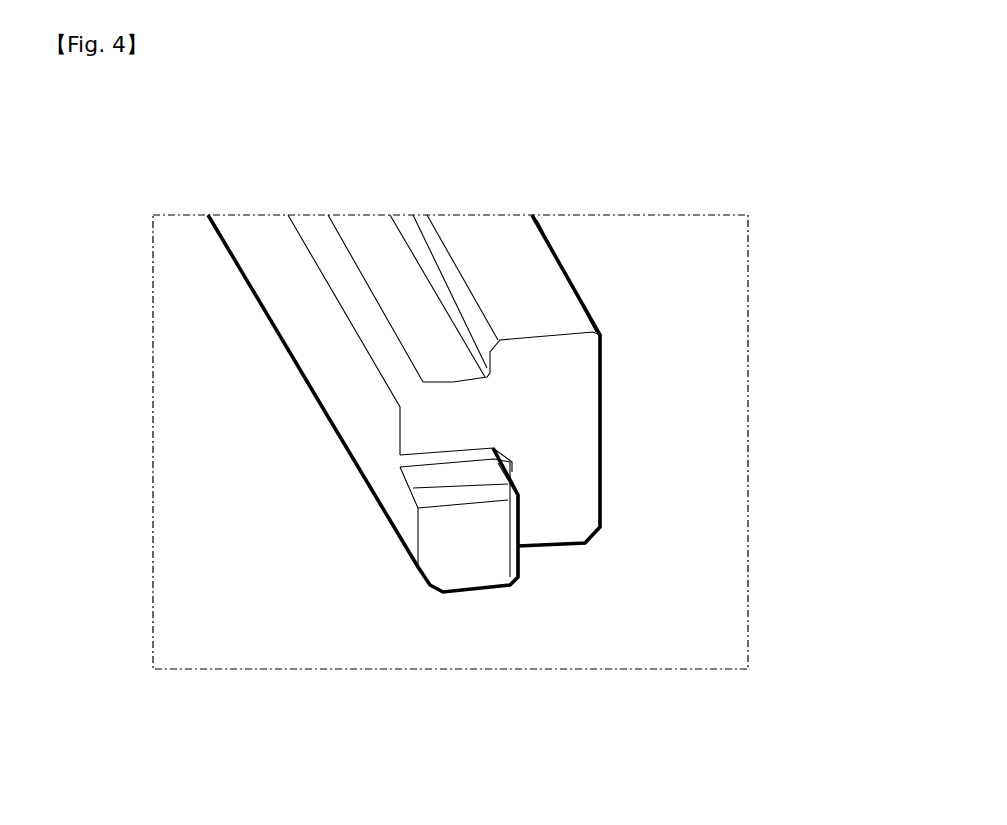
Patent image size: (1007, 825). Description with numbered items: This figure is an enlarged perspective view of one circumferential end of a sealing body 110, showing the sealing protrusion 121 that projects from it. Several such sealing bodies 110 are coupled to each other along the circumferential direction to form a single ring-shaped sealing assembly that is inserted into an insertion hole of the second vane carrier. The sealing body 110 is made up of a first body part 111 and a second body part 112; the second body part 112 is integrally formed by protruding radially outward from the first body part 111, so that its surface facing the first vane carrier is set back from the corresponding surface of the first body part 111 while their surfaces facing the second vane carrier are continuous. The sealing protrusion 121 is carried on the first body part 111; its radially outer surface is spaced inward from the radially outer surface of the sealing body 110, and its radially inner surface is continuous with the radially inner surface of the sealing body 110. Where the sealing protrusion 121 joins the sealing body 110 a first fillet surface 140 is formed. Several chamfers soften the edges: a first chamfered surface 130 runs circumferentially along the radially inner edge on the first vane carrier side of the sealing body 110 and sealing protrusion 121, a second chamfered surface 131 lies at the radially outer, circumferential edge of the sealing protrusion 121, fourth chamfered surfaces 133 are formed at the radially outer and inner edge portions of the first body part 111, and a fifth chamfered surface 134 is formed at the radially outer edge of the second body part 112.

The sealing body 110 is at (268, 344).
The first body part 111 is at (567, 480).
The second body part 112 is at (537, 370).
The sealing protrusion 121 is at (477, 558).
The first chamfered surface 130 is at (428, 583).
The second chamfered surface 131 is at (495, 449).
The fourth chamfered surface 133 is at (337, 262).
The fifth chamfered surface 134 is at (460, 282).
The first fillet surface 140 is at (432, 465).